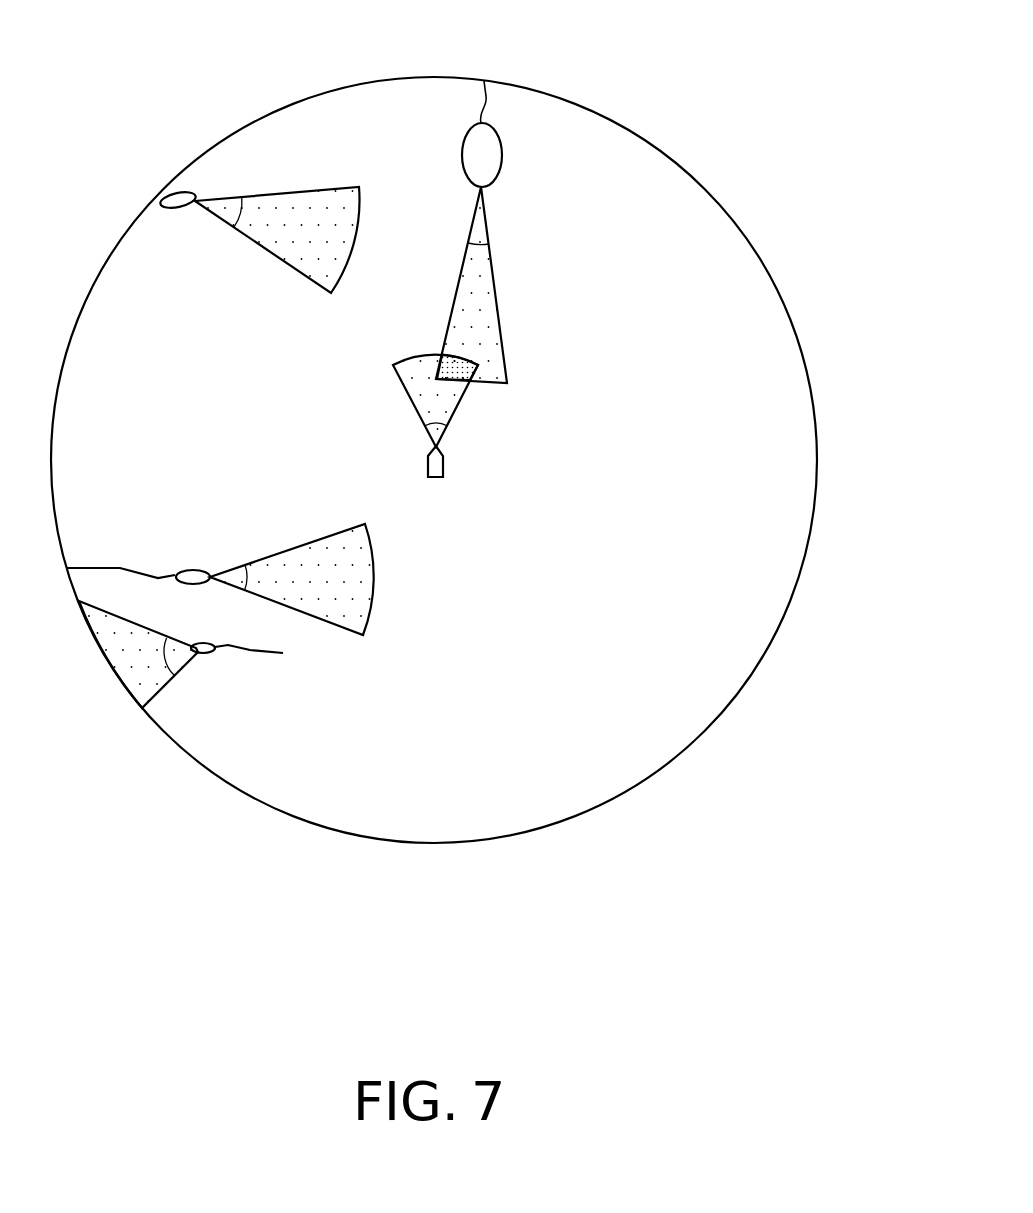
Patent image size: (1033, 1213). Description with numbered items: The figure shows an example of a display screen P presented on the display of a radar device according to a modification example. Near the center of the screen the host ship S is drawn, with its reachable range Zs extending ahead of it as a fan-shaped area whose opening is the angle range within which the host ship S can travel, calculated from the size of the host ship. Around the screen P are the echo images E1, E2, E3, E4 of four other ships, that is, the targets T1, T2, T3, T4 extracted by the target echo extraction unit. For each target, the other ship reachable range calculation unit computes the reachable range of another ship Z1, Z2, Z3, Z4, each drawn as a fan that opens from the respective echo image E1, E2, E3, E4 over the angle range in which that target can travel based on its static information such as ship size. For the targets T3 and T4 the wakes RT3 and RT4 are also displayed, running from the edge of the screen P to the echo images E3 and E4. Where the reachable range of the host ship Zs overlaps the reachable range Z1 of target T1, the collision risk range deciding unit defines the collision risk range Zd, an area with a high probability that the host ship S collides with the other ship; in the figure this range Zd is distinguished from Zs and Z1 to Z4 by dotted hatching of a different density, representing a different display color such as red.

The display screen P is at (607, 85).
The target T1 is at (424, 116).
The echo image E1 is at (462, 148).
The target T2 is at (126, 151).
The echo image E2 is at (178, 192).
The target T3 is at (163, 533).
The echo image E3 is at (192, 570).
The target T4 is at (248, 709).
The echo image E4 is at (247, 733).
The reachable range of another ship Z1 is at (507, 316).
The reachable range of another ship Z2 is at (260, 247).
The reachable range of another ship Z3 is at (287, 549).
The reachable range of another ship Z4 is at (108, 777).
The reachable range of the host ship Zs is at (461, 410).
The collision risk range Zd is at (447, 373).
The host ship S is at (445, 463).
The wake RT3 is at (118, 567).
The wake RT4 is at (340, 697).